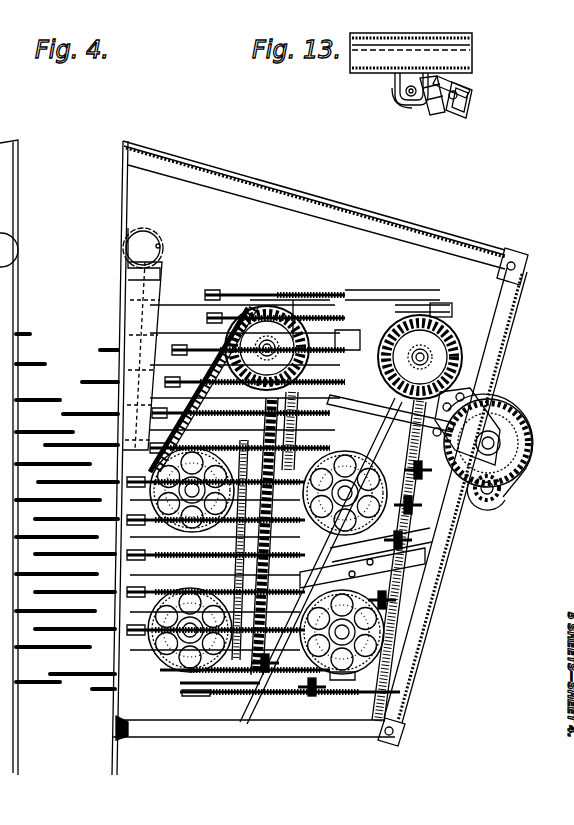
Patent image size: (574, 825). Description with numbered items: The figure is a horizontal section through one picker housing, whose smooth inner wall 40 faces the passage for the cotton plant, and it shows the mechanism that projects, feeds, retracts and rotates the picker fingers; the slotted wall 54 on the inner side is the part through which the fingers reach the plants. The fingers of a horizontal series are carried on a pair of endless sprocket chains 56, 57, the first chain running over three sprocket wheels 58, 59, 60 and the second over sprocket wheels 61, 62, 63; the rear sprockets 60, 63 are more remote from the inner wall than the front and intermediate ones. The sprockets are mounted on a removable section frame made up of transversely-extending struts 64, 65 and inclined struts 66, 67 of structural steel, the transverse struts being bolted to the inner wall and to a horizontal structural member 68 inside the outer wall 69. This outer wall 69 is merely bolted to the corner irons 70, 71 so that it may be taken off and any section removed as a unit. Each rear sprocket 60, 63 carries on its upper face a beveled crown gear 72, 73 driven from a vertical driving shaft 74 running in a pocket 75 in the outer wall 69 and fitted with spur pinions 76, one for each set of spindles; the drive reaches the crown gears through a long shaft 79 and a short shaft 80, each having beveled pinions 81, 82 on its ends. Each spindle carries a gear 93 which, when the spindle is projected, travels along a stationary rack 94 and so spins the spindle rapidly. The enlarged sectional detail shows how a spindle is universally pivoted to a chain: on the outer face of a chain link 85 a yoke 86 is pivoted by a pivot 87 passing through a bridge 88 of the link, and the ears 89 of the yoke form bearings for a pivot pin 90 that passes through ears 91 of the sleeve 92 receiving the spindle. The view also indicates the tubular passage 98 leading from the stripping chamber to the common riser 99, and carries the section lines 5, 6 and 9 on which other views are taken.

In FIG. 4, the section line 5— 5 is at (344, 300).
In FIG. 4, the section line 6— 6 is at (30, 600).
In FIG. 4, the section line 9— 9 is at (165, 240).
In FIG. 4, the smooth adjacent wall 40 is at (60, 255).
In FIG. 4, the slots 54 is at (70, 398).
In FIG. 4, the endless sprocket chain 56 is at (177, 599).
In FIG. 4, the endless sprocket chain 57 is at (430, 553).
In FIG. 4, the sprocket wheel 58 is at (180, 684).
In FIG. 4, the sprocket wheel 59 is at (178, 490).
In FIG. 4, the sprocket wheel 60 is at (262, 305).
In FIG. 4, the sprocket wheel 61 is at (388, 680).
In FIG. 4, the sprocket wheel 62 is at (345, 503).
In FIG. 4, the sprocket wheel 63 is at (445, 311).
In FIG. 4, the transversely-extending strut 64 is at (391, 413).
In FIG. 4, the transversely-extending strut 65 is at (342, 618).
In FIG. 4, the inclined strut 66 is at (263, 584).
In FIG. 4, the inclined strut 67 is at (365, 559).
In FIG. 4, the horizontal structural member 68 is at (428, 596).
In FIG. 4, the outer wall 69 is at (518, 338).
In FIG. 4, the corner iron 70 is at (404, 730).
In FIG. 4, the corner iron 71 is at (528, 262).
In FIG. 4, the beveled crown gear 72 is at (290, 298).
In FIG. 4, the beveled crown gear 73 is at (433, 306).
In FIG. 4, the driving shaft 74 is at (505, 488).
In FIG. 4, the pocket 75 is at (530, 428).
In FIG. 4, the spur pinion 76 is at (500, 498).
In FIG. 4, the long shaft 79 is at (329, 558).
In FIG. 4, the short shaft 80 is at (470, 395).
In FIG. 4, the beveled pinion 81 is at (267, 348).
In FIG. 4, the beveled pinion 82 is at (420, 357).
In FIG. 13, the chain link 85 is at (450, 100).
In FIG. 13, the yoke 86 is at (428, 105).
In FIG. 13, the pivot 87 is at (468, 86).
In FIG. 13, the bridge 88 is at (473, 100).
In FIG. 13, the ear 89 is at (394, 100).
In FIG. 13, the pivot pin 90 is at (405, 91).
In FIG. 13, the ear 91 is at (412, 80).
In FIG. 13, the sleeve 92 is at (472, 36).
In FIG. 4, the sleeve 92 is at (347, 340).
In FIG. 4, the gear 93 is at (410, 540).
In FIG. 4, the stationary rack 94 is at (258, 685).
In FIG. 4, the tubular passage 98 is at (160, 262).
In FIG. 4, the riser 99 is at (163, 236).